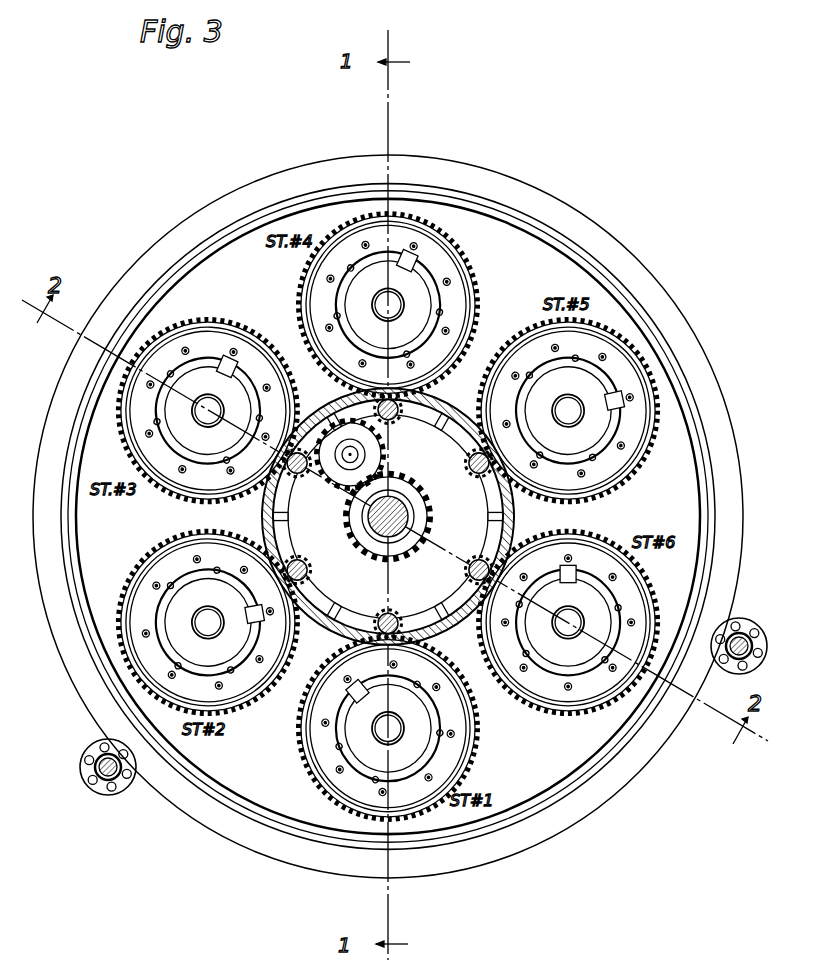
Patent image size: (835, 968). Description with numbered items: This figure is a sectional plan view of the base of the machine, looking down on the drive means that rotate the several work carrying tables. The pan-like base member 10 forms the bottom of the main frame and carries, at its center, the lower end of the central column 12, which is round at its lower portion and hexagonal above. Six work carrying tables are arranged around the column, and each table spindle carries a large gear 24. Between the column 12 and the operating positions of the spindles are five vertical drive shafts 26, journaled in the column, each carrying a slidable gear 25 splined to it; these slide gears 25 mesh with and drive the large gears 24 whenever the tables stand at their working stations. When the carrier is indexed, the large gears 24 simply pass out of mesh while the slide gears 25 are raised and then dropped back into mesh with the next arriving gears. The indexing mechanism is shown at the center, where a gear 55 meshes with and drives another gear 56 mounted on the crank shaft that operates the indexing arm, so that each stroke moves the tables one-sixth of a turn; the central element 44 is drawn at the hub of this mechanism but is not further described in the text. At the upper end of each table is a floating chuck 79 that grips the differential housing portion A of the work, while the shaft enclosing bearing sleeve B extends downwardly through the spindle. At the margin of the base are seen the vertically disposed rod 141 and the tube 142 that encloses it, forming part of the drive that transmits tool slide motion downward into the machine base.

The base member 10 is at (538, 794).
The central column 12 is at (505, 519).
The gear 24 is at (479, 292).
The slidable gear 25 is at (306, 550).
The vertical drive shaft 26 is at (304, 558).
The central shaft 44 is at (412, 507).
The gear 55 is at (368, 543).
The gear 56 is at (375, 460).
The chuck 79 is at (365, 264).
The rod 141 is at (100, 790).
The tube 142 is at (95, 766).
The differential housing portion A is at (560, 656).
The shaft enclosing bearing sleeve B is at (526, 653).